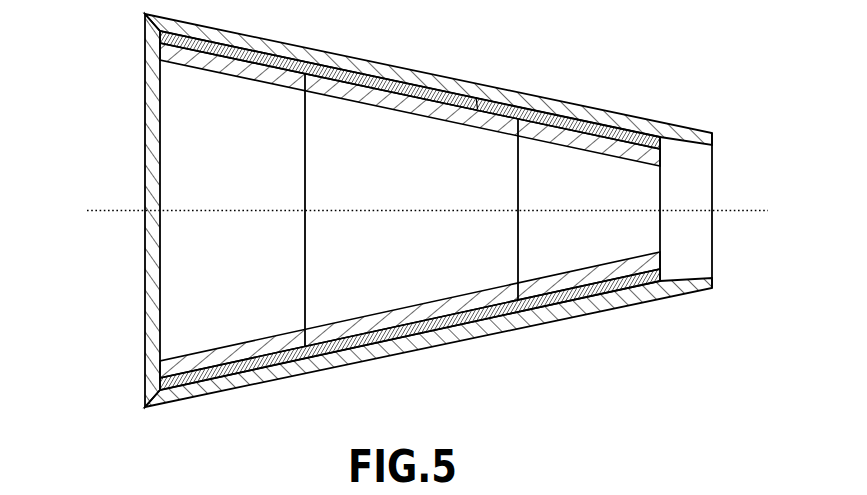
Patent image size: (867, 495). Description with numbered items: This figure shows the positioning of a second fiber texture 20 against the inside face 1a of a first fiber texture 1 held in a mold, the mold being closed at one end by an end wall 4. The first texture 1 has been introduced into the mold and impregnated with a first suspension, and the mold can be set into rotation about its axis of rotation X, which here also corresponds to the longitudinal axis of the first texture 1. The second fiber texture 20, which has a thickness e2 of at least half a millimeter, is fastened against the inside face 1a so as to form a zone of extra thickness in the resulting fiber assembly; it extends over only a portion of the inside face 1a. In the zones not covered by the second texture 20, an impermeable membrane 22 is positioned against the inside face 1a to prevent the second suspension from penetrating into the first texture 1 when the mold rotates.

The first fiber texture 1 is at (575, 112).
The inside face of the first fiber texture 1a is at (647, 165).
The end wall 4 is at (155, 136).
The second fiber texture 20 is at (362, 103).
The impermeable membrane 22 is at (203, 63).
The thickness of the second fiber texture e2 is at (476, 97).
The axis of rotation X is at (107, 210).